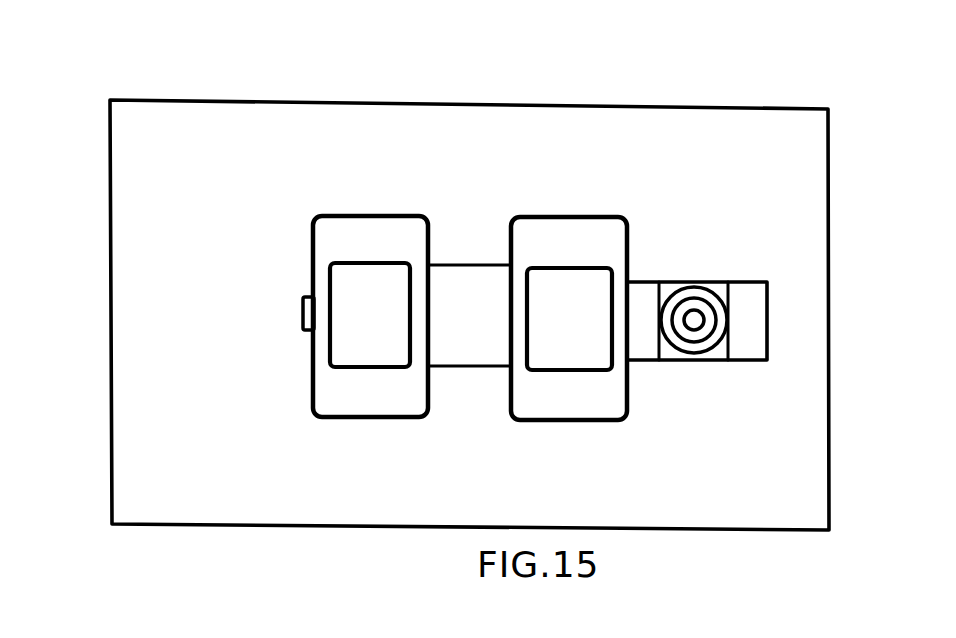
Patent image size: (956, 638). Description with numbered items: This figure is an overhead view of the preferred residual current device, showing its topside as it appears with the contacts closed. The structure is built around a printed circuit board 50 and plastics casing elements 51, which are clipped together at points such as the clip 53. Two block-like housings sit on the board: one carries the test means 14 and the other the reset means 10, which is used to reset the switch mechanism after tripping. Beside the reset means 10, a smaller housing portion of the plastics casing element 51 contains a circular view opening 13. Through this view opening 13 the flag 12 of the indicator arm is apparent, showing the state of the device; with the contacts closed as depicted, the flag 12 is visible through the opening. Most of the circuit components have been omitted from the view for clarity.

The printed circuit board 50 is at (182, 370).
The test means 14 is at (357, 292).
The reset means 10 is at (573, 295).
The clip 53 is at (303, 307).
The plastics casing element 51 is at (753, 337).
The view opening 13 is at (712, 318).
The flag 12 is at (697, 317).